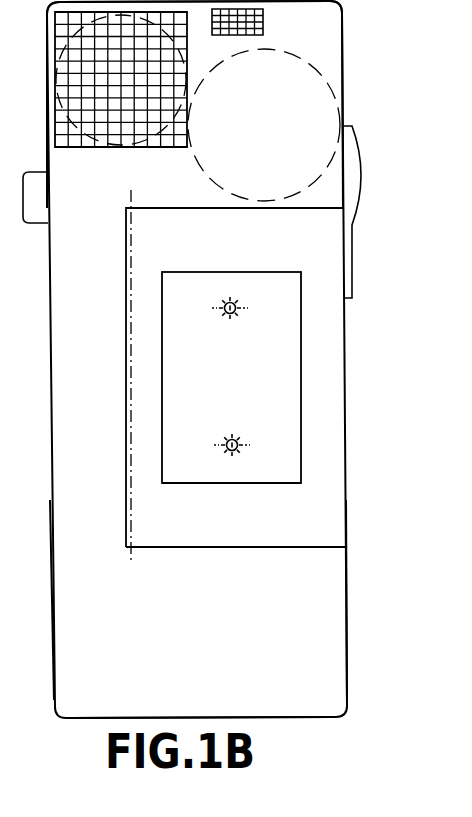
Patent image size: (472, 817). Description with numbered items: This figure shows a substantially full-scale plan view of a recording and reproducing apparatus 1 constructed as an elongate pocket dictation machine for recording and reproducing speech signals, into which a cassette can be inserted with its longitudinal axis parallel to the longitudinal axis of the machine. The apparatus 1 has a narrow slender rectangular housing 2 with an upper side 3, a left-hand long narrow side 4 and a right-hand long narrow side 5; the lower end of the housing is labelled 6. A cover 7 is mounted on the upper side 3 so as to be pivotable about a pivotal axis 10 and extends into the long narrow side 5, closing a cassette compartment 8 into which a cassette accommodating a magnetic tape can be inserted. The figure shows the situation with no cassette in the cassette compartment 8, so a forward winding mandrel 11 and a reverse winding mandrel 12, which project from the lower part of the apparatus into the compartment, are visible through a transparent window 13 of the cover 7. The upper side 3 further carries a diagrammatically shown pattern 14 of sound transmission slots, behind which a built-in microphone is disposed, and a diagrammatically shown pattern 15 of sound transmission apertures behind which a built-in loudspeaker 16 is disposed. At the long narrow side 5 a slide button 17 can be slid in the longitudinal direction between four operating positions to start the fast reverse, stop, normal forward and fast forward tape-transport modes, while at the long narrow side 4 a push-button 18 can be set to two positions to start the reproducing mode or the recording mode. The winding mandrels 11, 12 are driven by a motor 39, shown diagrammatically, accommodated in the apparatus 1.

The recording and reproducing apparatus 1 is at (210, 393).
The housing 2 is at (49, 415).
The upper side 3 is at (345, 50).
The left-hand long narrow side 4 is at (52, 603).
The right-hand long narrow side 5 is at (349, 595).
The bottom wall 6 is at (280, 718).
The cover 7 is at (330, 457).
The cassette compartment 8 is at (162, 393).
The pivotal axis 10 is at (133, 564).
The forward winding mandrel 11 is at (240, 440).
The reverse winding mandrel 12 is at (238, 304).
The transparent window 13 is at (205, 468).
The pattern of sound transmission slots 14 is at (263, 25).
The pattern of sound transmission apertures 15 is at (62, 150).
The loudspeaker 16 is at (174, 134).
The slide button 17 is at (357, 163).
The push-button 18 is at (32, 223).
The motor 39 is at (187, 158).